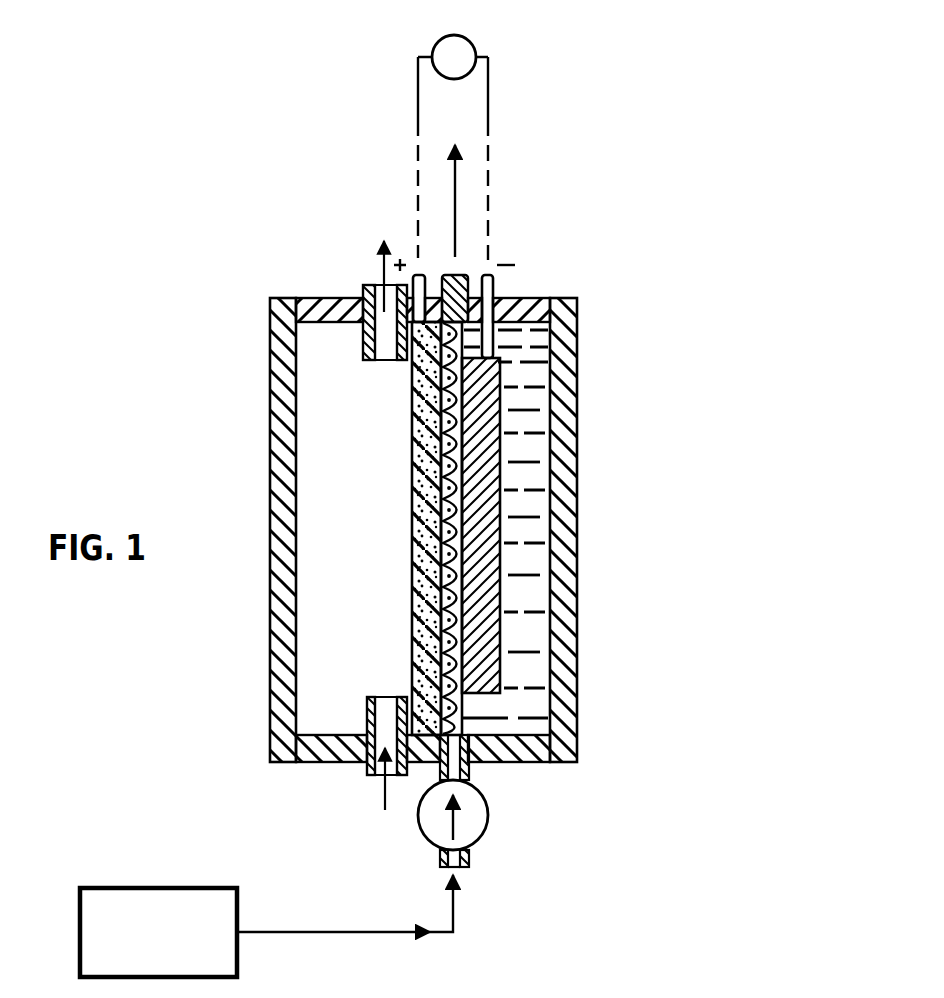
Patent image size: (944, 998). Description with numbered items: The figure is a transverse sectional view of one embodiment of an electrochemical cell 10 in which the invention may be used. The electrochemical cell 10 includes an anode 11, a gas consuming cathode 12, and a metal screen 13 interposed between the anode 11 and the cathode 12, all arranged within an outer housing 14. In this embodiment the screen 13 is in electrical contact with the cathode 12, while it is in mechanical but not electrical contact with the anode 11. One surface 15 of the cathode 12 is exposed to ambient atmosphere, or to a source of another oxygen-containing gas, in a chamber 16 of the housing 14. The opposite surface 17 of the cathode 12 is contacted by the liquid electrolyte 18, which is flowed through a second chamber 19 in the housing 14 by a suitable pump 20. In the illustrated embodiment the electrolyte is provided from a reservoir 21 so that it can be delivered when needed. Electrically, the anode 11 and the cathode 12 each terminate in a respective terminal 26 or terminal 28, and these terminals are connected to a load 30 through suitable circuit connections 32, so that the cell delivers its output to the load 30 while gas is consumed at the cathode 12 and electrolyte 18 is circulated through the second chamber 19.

The electrochemical cell 10 is at (262, 270).
The anode 11 is at (500, 482).
The gas consuming cathode 12 is at (440, 476).
The metal screen 13 is at (465, 432).
The outer housing 14 is at (560, 610).
The surface of the cathode 15 is at (460, 430).
The chamber 16 is at (290, 545).
The opposite surface of the cathode 17 is at (440, 553).
The liquid electrolyte 18 is at (533, 362).
The second chamber 19 is at (532, 330).
The pump 20 is at (488, 823).
The reservoir 21 is at (142, 888).
The terminal 26 is at (497, 300).
The terminal 28 is at (418, 272).
The load 30 is at (478, 46).
The circuit connections 32 is at (412, 106).